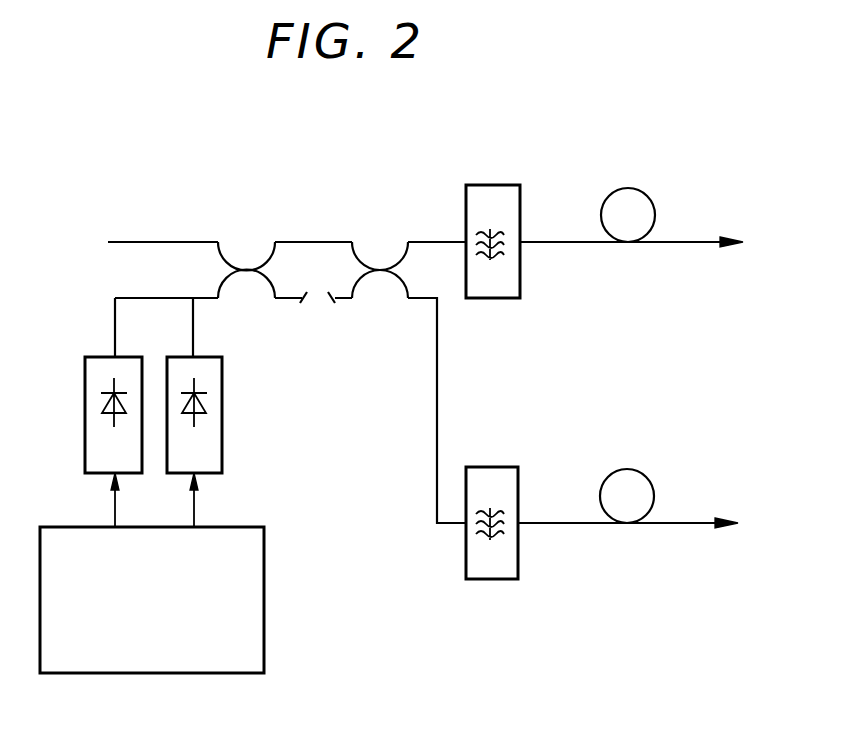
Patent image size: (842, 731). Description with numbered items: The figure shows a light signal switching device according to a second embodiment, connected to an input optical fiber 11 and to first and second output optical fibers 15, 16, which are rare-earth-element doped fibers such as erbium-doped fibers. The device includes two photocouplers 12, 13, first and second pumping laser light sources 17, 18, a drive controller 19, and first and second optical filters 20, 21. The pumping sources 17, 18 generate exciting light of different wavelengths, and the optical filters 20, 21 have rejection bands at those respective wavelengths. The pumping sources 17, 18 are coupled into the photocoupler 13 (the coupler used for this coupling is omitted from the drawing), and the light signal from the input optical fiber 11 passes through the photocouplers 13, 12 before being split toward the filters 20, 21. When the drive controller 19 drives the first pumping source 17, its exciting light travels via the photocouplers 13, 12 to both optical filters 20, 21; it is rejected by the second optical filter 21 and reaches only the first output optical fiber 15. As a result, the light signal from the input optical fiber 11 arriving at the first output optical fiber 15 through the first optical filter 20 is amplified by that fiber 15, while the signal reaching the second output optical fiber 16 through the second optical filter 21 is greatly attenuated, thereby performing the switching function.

The input optical fiber 11 is at (163, 224).
The photocoupler 12 is at (370, 365).
The photocoupler 13 is at (233, 282).
The first output optical fiber 15 is at (631, 237).
The second output optical fiber 16 is at (628, 517).
The first pumping laser light source 17 is at (88, 415).
The second pumping laser light source 18 is at (220, 415).
The drive controller 19 is at (176, 573).
The first optical filter 20 is at (493, 224).
The second optical filter 21 is at (492, 503).